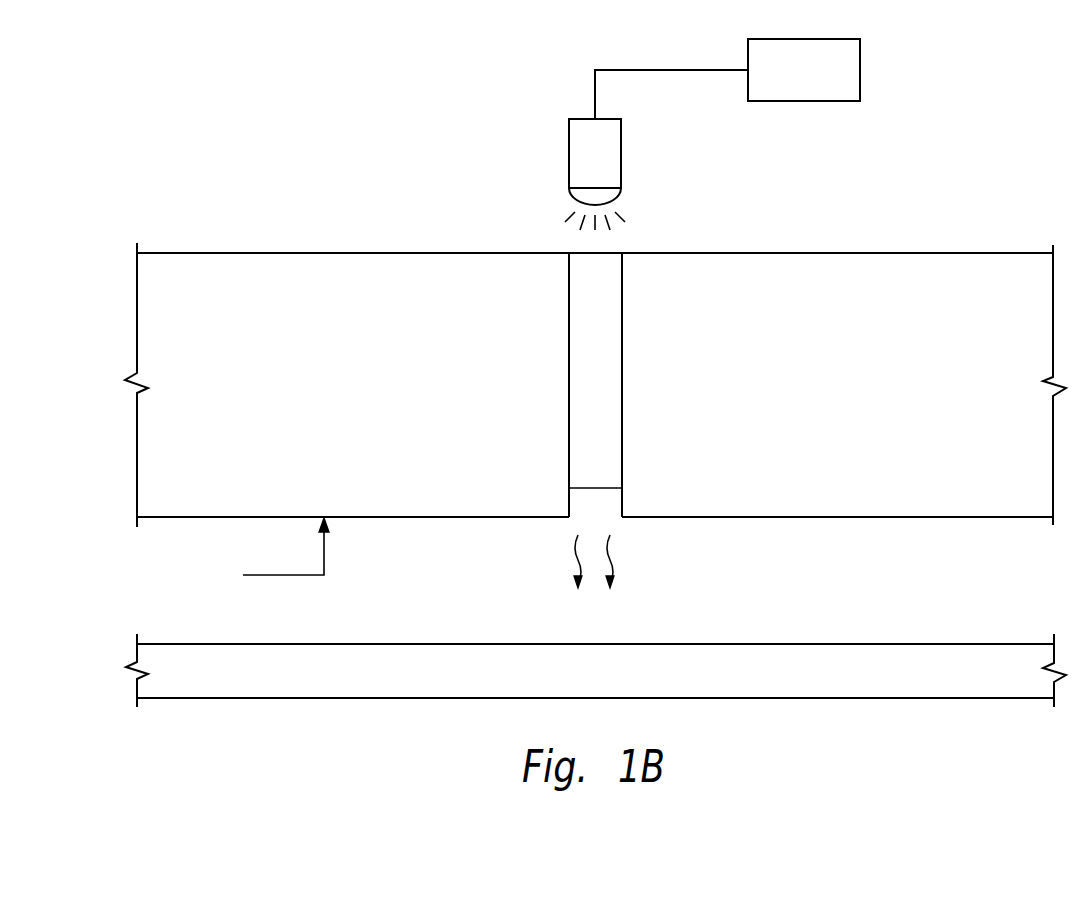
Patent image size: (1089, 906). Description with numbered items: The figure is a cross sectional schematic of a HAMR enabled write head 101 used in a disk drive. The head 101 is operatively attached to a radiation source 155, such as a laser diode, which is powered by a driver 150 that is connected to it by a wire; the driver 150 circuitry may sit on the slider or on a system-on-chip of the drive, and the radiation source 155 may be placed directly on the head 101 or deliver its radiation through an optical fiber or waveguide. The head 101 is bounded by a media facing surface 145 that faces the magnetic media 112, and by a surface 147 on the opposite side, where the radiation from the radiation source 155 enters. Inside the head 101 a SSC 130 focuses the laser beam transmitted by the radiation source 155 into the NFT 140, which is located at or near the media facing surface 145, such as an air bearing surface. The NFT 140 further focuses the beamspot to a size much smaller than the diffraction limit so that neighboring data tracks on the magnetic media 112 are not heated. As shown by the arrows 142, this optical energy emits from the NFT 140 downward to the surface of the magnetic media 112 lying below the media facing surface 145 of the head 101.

The HAMR enabled write head 101 is at (232, 207).
The magnetic media 112 is at (868, 698).
The SSC 130 is at (569, 287).
The NFT 140 is at (569, 500).
The arrows 142 is at (560, 552).
The media facing surface 145 is at (327, 555).
The surface 147 is at (835, 252).
The driver 150 is at (862, 56).
The radiation source 155 is at (577, 137).